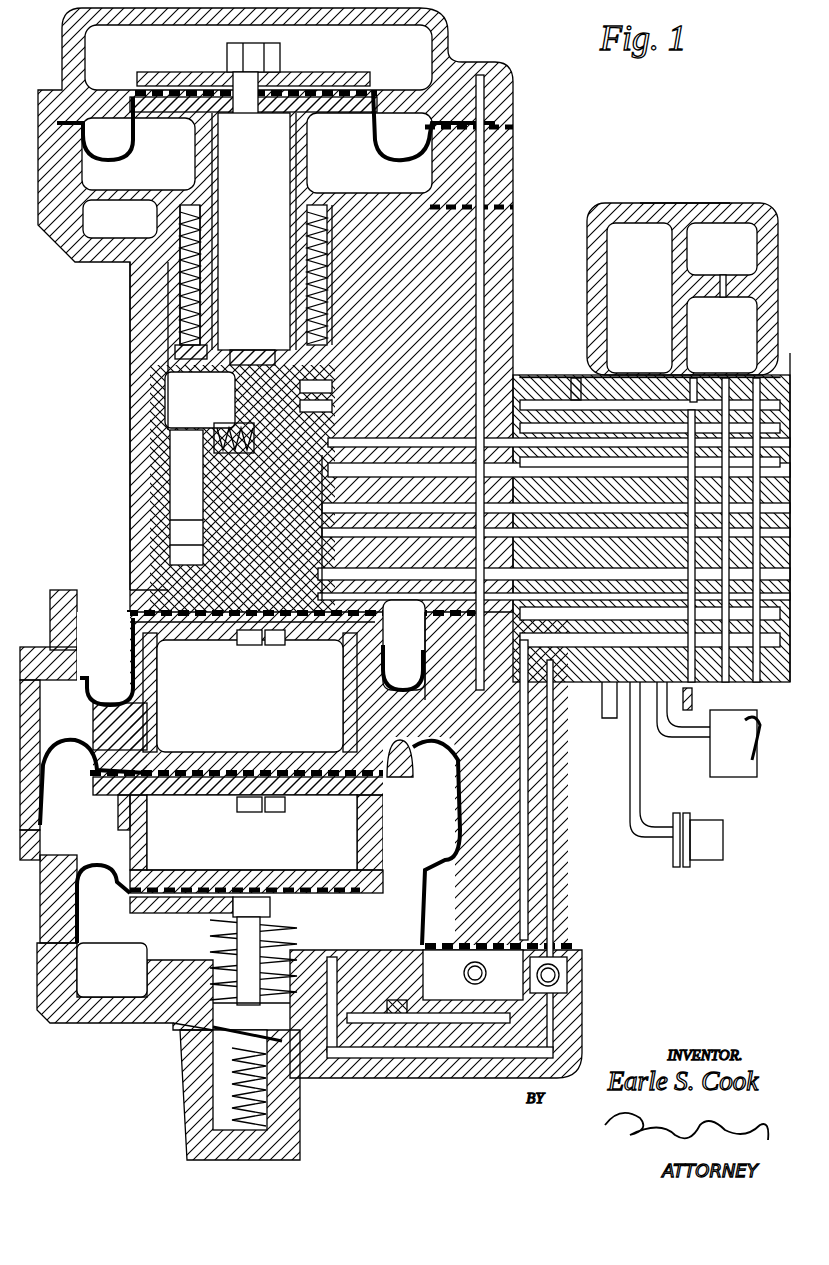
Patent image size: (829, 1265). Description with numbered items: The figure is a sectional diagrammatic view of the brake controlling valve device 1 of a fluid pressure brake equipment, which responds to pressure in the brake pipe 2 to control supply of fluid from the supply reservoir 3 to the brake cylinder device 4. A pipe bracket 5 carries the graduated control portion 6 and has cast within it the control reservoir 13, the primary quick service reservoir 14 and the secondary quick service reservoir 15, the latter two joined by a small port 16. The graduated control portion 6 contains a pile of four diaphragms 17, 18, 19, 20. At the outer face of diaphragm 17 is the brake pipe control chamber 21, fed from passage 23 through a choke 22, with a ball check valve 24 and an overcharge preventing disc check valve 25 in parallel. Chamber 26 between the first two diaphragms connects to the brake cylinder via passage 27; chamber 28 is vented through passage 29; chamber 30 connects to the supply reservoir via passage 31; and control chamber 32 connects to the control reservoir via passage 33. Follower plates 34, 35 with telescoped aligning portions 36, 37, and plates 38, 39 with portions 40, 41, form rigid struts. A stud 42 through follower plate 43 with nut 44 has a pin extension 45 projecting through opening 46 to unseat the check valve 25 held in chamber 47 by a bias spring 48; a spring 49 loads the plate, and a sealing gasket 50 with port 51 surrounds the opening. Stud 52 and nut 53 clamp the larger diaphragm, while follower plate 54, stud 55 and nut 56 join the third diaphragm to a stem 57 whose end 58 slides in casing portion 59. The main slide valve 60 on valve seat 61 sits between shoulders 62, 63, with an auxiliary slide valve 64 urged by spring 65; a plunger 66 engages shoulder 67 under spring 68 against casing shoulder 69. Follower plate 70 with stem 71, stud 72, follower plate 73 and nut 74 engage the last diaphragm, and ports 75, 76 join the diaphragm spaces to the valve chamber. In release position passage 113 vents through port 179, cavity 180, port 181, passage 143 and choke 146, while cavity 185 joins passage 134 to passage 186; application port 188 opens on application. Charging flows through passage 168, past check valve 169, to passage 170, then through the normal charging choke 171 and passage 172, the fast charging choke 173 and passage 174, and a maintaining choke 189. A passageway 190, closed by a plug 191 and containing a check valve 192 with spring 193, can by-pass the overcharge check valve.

The brake controlling valve device 1 is at (591, 198).
The brake pipe 2 is at (604, 715).
The supply reservoir 3 is at (748, 768).
The brake cylinder device 4 is at (724, 840).
The pipe bracket 5 is at (695, 198).
The graduated control portion 6 is at (65, 27).
The control reservoir 13 is at (622, 235).
The primary quick service reservoir 14 is at (695, 333).
The secondary quick service reservoir 15 is at (695, 248).
The port 16 is at (723, 275).
The diaphragm 17 is at (105, 880).
The diaphragm 18 is at (65, 748).
The diaphragm 19 is at (115, 692).
The diaphragm 20 is at (120, 152).
The brake pipe control chamber 21 is at (105, 995).
The choke 22 is at (398, 1000).
The passage 23 is at (515, 1010).
The check valve 24 is at (462, 970).
The overcharge preventing check valve 25 is at (228, 1003).
The chamber 26 is at (45, 860).
The passage 27 is at (500, 803).
The chamber 28 is at (150, 700).
The passage 29 is at (35, 690).
The chamber 30 is at (165, 508).
The passage 31 is at (727, 682).
The control chamber 32 is at (415, 40).
The passage 33 is at (540, 385).
The follower plate 34 is at (218, 870).
The follower plate 35 is at (200, 797).
The aligning portion 36 is at (147, 822).
The aligning portion 37 is at (118, 822).
The follower plate 38 is at (225, 750).
The follower plate 39 is at (316, 640).
The aligning portion 40 is at (343, 698).
The aligning portion 41 is at (152, 660).
The stud 42 is at (233, 908).
The follower plate 43 is at (160, 900).
The nut 44 is at (235, 932).
The pin extension 45 is at (262, 950).
The opening 46 is at (222, 1020).
The chamber 47 is at (230, 1080).
The bias spring 48 is at (300, 1105).
The spring 49 is at (205, 1020).
The sealing gasket 50 is at (175, 955).
The port 51 is at (335, 957).
The stud 52 is at (280, 812).
The nut 53 is at (250, 812).
The follower plate 54 is at (165, 590).
The stud 55 is at (268, 645).
The nut 56 is at (245, 645).
The stem 57 is at (165, 472).
The end 58 is at (180, 290).
The casing portion 59 is at (130, 205).
The main slide valve 60 is at (275, 528).
The valve seat 61 is at (312, 370).
The shoulder 62 is at (280, 535).
The shoulder 63 is at (262, 372).
The auxiliary slide valve 64 is at (260, 465).
The spring 65 is at (214, 440).
The plunger 66 is at (165, 270).
The shoulder 67 is at (178, 352).
The spring 68 is at (186, 312).
The shoulder 69 is at (345, 345).
The follower plate 70 is at (145, 128).
The stem 71 is at (220, 228).
The stud 72 is at (257, 113).
The follower plate 73 is at (215, 72).
The nut 74 is at (282, 52).
The port 75 is at (404, 645).
The port 76 is at (362, 196).
The passage 113 is at (425, 442).
The passage 134 is at (360, 570).
The passage 143 is at (430, 535).
The choke 146 is at (690, 688).
The passage 168 is at (390, 1060).
The check valve 169 is at (560, 976).
The passage 170 is at (562, 893).
The normal charging choke 171 is at (615, 560).
The passage 172 is at (412, 580).
The fast charging choke 173 is at (560, 478).
The passage 174 is at (695, 392).
The port 179 is at (332, 430).
The cavity 180 is at (200, 400).
The port 181 is at (305, 465).
The cavity 185 is at (330, 548).
The passage 186 is at (385, 512).
The application port 188 is at (332, 390).
The choke 189 is at (545, 620).
The passageway 190 is at (435, 656).
The plug 191 is at (575, 382).
The check valve 192 is at (430, 760).
The spring 193 is at (430, 688).